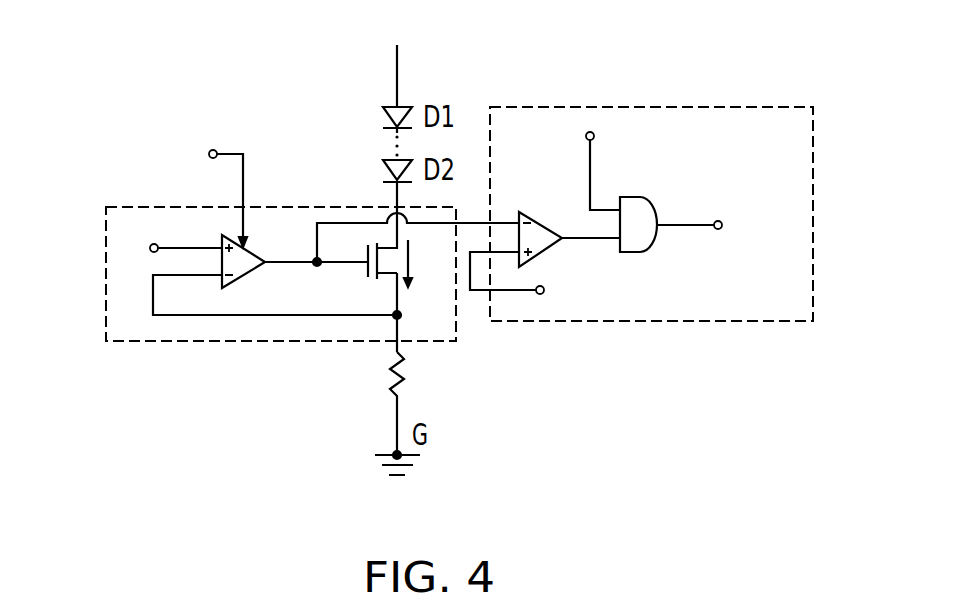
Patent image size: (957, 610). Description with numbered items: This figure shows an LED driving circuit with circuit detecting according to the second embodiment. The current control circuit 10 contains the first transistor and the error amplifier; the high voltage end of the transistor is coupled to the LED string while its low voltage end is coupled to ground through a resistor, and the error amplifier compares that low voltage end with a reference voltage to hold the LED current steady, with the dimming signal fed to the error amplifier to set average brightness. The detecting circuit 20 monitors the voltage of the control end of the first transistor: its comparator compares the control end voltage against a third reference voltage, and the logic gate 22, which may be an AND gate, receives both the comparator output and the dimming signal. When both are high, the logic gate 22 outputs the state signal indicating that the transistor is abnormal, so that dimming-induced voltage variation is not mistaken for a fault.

The current control circuit 10 is at (128, 205).
The detecting circuit 20 is at (669, 184).
The logic gate 22 is at (661, 184).